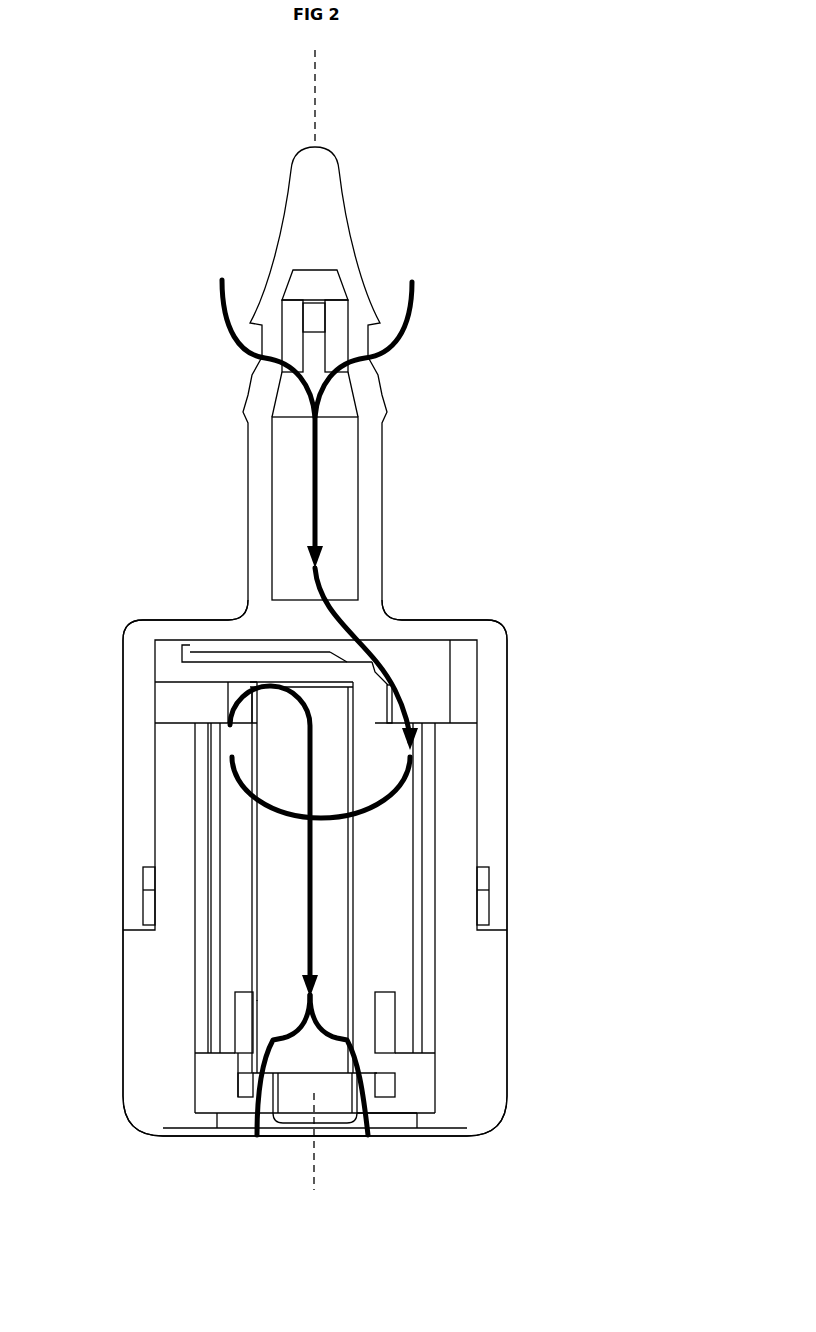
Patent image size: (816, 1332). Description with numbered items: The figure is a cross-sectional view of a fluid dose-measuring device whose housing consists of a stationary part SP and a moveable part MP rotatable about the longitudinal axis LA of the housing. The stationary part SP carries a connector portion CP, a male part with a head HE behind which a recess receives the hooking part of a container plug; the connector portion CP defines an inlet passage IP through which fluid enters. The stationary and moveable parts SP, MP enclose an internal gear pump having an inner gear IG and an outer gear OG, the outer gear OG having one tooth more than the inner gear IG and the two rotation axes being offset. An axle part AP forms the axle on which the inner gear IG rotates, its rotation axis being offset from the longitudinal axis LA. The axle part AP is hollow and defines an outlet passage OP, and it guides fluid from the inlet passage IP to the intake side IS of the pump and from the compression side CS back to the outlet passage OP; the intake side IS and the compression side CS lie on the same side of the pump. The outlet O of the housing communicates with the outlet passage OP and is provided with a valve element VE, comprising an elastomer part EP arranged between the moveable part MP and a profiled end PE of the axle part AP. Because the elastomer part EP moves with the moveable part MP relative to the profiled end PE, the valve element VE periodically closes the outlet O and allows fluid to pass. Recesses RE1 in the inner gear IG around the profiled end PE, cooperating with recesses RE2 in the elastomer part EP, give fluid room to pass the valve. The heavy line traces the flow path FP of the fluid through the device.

The longitudinal axis LA is at (315, 88).
The head HE is at (328, 202).
The flow path FP is at (410, 310).
The connector portion CP is at (368, 460).
The inlet passage IP is at (290, 485).
The compression side CS is at (222, 703).
The intake side IS is at (425, 715).
The stationary part SP is at (490, 743).
The inner gear IG is at (390, 837).
The axle part AP is at (353, 972).
The outlet passage OP is at (292, 937).
The recesses RE1 is at (240, 1012).
The recesses RE2 is at (247, 1082).
The elastomer part EP is at (222, 1087).
The moveable part MP is at (490, 1042).
The outer gear OG is at (315, 868).
The valve element VE is at (385, 1112).
The profiled end PE is at (328, 1110).
The outlet O is at (280, 1157).